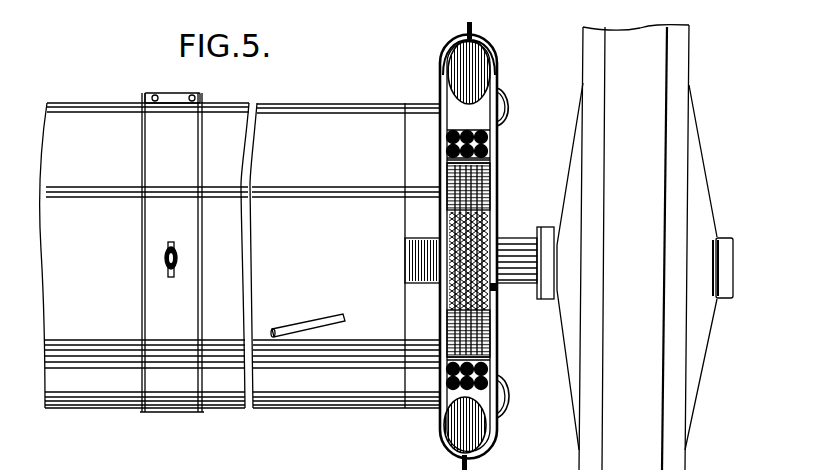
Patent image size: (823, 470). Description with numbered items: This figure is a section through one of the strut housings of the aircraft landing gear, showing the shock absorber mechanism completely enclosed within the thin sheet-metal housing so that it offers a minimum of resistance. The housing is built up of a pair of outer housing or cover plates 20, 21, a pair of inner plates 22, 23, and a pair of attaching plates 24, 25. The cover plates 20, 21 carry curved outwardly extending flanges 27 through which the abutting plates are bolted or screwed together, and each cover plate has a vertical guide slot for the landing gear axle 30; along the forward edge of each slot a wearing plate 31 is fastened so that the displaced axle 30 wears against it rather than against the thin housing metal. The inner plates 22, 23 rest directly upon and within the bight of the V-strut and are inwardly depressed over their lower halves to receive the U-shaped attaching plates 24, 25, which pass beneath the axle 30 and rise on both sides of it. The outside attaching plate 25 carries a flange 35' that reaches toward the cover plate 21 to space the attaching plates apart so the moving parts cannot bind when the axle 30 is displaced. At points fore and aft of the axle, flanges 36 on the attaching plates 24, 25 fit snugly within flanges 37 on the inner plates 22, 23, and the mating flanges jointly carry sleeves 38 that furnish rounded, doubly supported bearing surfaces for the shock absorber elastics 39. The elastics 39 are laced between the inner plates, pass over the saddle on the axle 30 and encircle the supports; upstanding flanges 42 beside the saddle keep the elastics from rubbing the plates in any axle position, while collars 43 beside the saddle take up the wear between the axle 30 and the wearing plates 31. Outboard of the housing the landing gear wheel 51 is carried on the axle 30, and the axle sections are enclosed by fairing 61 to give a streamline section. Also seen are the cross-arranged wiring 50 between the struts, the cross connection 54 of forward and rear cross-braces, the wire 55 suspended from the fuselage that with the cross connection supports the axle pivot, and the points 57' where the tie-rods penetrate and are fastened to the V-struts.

The outer housing plate 20 is at (443, 97).
The outer housing plate 21 is at (503, 94).
The inner plate 22 is at (442, 66).
The inner plate 23 is at (490, 86).
The attaching plate 24 is at (446, 150).
The outside attaching plate 25 is at (494, 162).
The flange 27 is at (473, 36).
The landing gear axle 30 is at (734, 264).
The wearing plate 31 is at (432, 292).
The flange 35' is at (503, 241).
The flange 36 is at (448, 183).
The flange 37 is at (452, 200).
The sleeve 38 is at (462, 222).
The shock absorber elastics 39 is at (446, 134).
The upstanding flange 42 is at (486, 226).
The collar 43 is at (495, 291).
The wiring 50 is at (311, 323).
The wheel 51 is at (690, 43).
The cross connection 54 is at (307, 312).
The wire 55 is at (165, 258).
The tie-rod fastening 57' is at (540, 255).
The fairing 61 is at (413, 258).